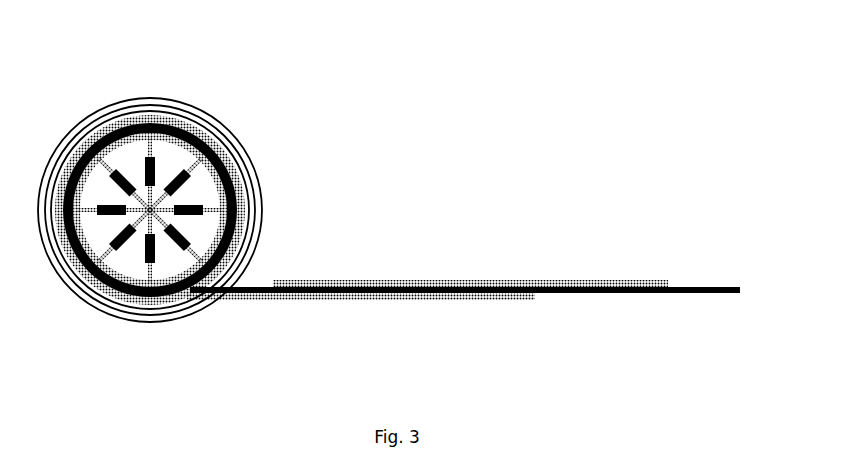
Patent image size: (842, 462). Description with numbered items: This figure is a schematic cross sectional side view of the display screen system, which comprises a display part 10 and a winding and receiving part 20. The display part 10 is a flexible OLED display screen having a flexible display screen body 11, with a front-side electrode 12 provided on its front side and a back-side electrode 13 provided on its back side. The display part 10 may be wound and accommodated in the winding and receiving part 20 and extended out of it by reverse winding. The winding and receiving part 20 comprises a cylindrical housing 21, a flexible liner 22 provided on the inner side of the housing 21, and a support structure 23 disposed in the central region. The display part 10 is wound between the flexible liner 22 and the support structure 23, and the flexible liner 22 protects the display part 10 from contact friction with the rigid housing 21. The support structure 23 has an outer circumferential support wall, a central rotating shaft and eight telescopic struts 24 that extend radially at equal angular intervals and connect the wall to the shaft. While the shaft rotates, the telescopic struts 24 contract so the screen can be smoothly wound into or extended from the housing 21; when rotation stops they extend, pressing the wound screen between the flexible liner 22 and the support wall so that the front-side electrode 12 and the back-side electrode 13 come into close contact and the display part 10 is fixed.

The display part 10 is at (465, 290).
The flexible display screen body 11 is at (692, 289).
The front-side electrode 12 is at (595, 283).
The back-side electrode 13 is at (335, 300).
The winding and receiving part 20 is at (160, 196).
The housing 21 is at (155, 98).
The flexible liner 22 is at (103, 129).
The support structure 23 is at (183, 131).
The telescopic struts 24 is at (193, 206).